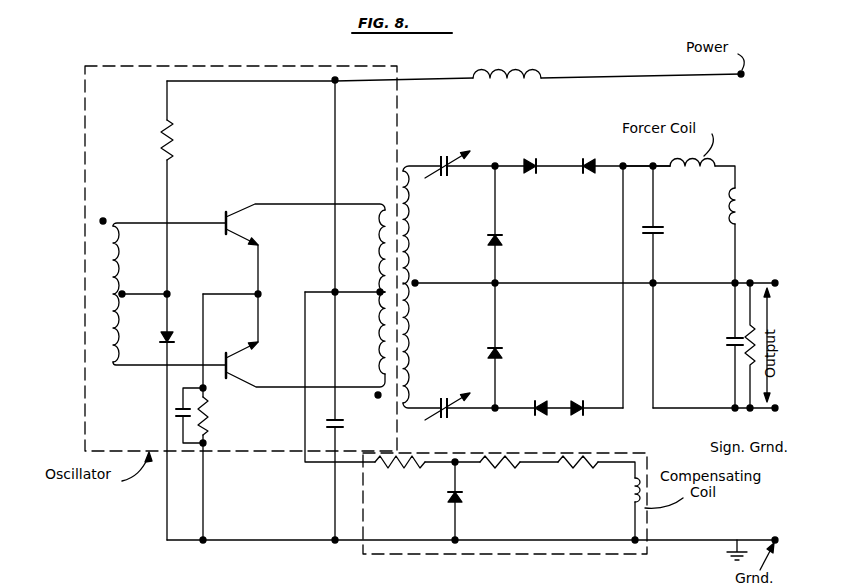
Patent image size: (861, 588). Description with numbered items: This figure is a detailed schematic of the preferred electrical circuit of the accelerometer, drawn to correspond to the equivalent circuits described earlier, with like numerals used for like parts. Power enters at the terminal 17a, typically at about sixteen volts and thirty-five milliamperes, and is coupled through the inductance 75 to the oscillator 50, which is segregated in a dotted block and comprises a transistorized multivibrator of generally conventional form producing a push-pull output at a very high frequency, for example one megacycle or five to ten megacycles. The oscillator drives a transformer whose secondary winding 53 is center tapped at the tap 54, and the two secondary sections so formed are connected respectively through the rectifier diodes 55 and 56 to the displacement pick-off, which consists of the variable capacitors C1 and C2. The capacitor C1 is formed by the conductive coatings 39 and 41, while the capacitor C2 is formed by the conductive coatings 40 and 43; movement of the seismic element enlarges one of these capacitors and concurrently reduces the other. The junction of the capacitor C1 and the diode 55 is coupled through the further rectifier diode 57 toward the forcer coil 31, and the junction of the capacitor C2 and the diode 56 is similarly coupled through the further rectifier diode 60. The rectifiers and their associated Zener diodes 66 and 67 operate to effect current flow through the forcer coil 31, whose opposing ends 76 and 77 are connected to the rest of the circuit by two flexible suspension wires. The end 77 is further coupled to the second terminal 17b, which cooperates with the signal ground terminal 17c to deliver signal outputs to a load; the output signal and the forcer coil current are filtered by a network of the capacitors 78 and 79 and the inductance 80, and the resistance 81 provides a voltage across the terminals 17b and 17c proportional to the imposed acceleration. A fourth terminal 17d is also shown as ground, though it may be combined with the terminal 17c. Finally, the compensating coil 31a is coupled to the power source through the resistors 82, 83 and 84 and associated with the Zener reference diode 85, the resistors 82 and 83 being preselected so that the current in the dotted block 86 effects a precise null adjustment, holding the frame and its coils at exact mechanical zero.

The inductance 75 is at (533, 72).
The terminal 17a is at (741, 77).
The conductive coating 41 is at (438, 159).
The conductive coating 39 is at (455, 180).
The variable capacitor C1 is at (449, 183).
The rectifier diode 57 is at (530, 163).
The Zener diode 66 is at (590, 174).
The forcer coil end 76 is at (653, 170).
The forcer coil 31 is at (698, 170).
The forcer coil end 77 is at (739, 165).
The inductance 80 is at (740, 214).
The capacitor 78 is at (666, 232).
The second terminal 17b is at (763, 281).
The resistance 81 is at (745, 333).
The capacitor 79 is at (728, 347).
The signal ground terminal 17c is at (765, 408).
The rectifier diode 55 is at (498, 241).
The rectifier diode 56 is at (502, 350).
The rectifier diode 60 is at (543, 371).
The Zener diode 67 is at (578, 337).
The secondary winding 53 is at (422, 242).
The center tap 54 is at (418, 282).
The conductive coating 43 is at (438, 401).
The conductive coating 40 is at (452, 419).
The variable capacitor C2 is at (448, 396).
The oscillator 50 is at (243, 389).
The resistor 84 is at (408, 467).
The resistor 82 is at (506, 466).
The resistor 83 is at (586, 465).
The Zener reference diode 85 is at (463, 493).
The compensating coil 31a is at (632, 497).
The dotted block 86 is at (587, 556).
The fourth terminal 17d is at (774, 537).